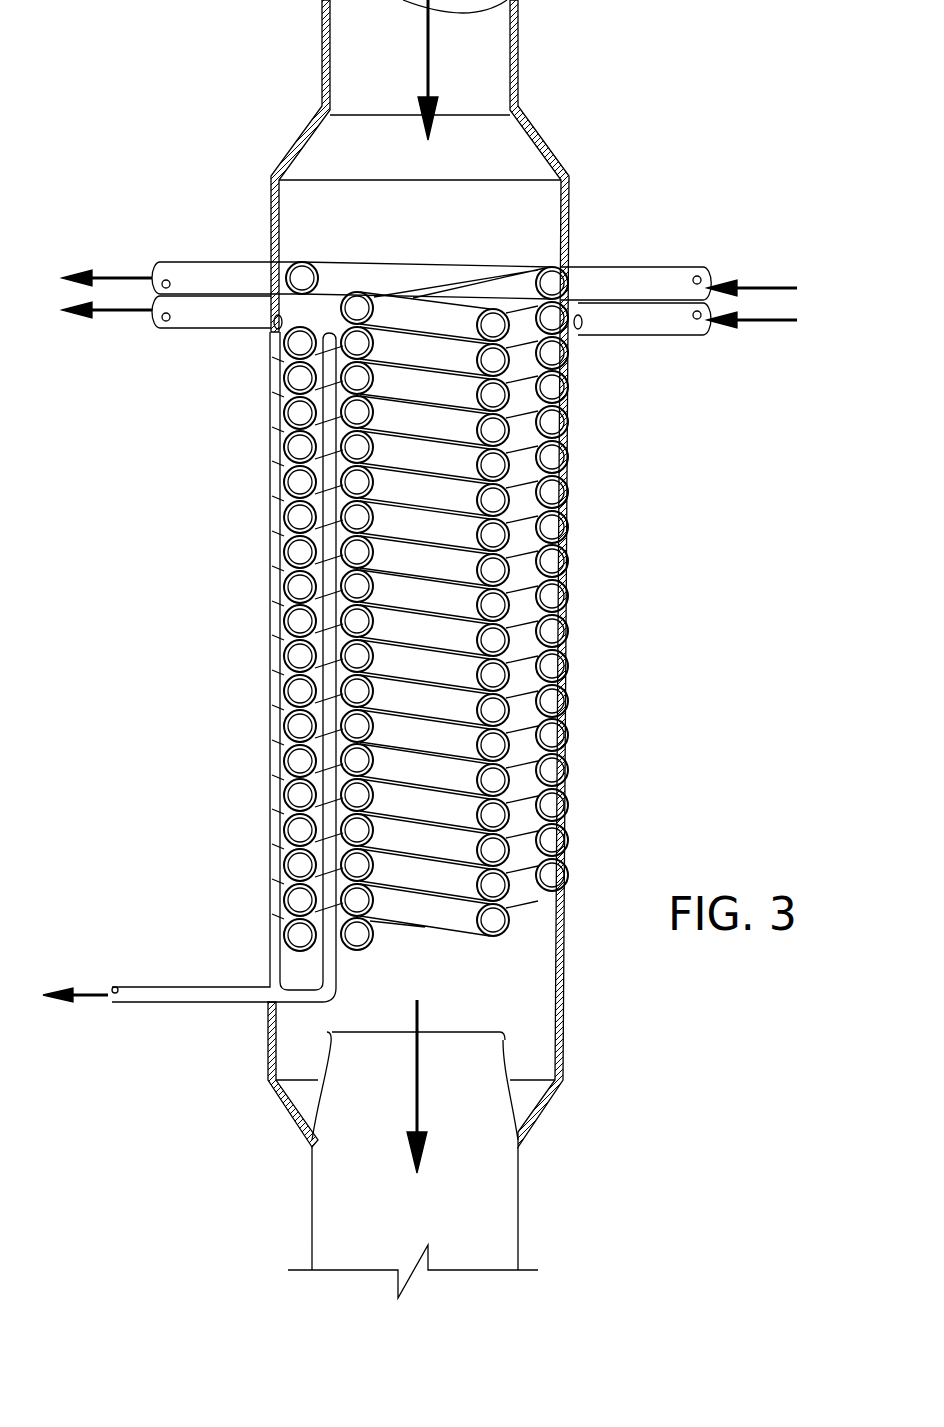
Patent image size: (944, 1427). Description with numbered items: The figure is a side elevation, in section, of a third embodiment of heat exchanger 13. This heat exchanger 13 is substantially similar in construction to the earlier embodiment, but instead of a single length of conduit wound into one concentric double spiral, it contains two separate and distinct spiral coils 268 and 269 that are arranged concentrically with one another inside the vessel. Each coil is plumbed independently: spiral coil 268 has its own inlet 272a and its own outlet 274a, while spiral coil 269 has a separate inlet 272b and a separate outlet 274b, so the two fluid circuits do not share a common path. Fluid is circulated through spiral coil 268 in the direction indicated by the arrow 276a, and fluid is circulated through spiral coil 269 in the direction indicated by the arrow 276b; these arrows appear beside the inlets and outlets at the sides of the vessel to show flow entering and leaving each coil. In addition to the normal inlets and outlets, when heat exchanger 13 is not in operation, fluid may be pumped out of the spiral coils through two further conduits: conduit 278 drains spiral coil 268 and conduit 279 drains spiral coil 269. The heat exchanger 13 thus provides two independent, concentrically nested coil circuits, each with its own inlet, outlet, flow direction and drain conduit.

The heat exchanger 13 is at (238, 137).
The spiral coil 268 is at (553, 600).
The spiral coil 269 is at (497, 677).
The inlet 272a is at (630, 285).
The inlet 272b is at (645, 318).
The outlet 274a is at (235, 317).
The outlet 274b is at (237, 275).
The arrow 276a is at (128, 308).
The arrow 276b is at (128, 273).
The conduit 278 is at (272, 635).
The conduit 279 is at (330, 592).